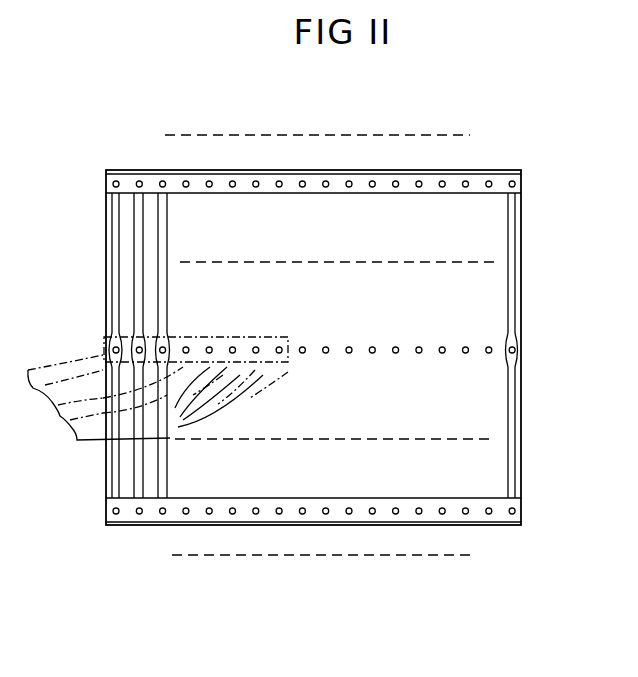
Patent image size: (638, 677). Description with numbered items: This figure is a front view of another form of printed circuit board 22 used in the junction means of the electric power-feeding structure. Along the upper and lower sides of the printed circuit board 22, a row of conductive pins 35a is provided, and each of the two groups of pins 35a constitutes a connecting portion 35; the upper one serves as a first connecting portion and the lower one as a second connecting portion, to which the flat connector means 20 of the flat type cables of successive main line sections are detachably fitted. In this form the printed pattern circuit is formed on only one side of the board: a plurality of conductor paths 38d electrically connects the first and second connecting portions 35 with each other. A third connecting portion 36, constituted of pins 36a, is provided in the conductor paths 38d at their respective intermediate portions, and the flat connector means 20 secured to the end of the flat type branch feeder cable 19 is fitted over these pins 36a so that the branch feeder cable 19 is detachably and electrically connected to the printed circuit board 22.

The flat type branch feeder cable 19 is at (58, 392).
The flat connector means 20 is at (103, 353).
The printed circuit board 22 is at (521, 437).
The connecting portion 35 is at (520, 120).
The pins 35a is at (139, 181).
The third connecting portion 36 is at (512, 324).
The pins 36a is at (108, 345).
The conductor paths 38d is at (118, 238).